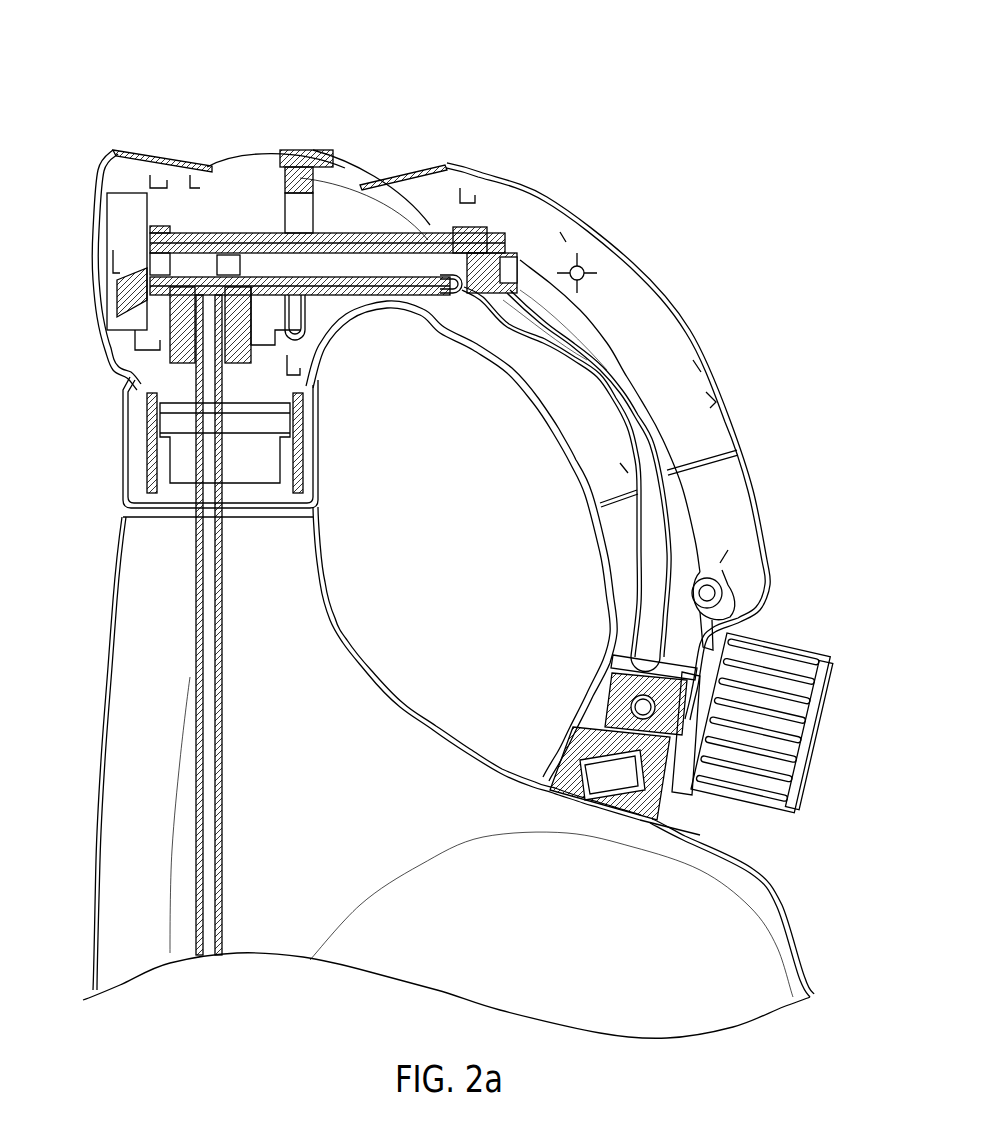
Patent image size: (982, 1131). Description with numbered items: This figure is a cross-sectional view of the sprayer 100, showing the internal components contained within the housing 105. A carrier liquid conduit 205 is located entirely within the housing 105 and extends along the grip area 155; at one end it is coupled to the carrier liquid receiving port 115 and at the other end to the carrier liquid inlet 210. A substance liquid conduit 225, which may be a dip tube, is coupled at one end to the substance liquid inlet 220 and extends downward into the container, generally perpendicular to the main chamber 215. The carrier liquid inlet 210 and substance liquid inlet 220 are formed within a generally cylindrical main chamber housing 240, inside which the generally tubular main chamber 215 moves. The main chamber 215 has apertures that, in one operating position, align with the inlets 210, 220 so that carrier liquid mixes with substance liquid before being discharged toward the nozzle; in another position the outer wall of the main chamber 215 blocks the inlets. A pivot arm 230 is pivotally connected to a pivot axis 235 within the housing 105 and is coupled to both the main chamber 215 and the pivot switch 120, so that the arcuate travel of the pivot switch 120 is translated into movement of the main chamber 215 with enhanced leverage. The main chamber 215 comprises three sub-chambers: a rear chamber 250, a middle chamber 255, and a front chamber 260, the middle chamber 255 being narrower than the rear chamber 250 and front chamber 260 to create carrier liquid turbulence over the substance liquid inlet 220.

The sprayer 100 is at (206, 69).
The housing 105 is at (545, 197).
The carrier liquid receiving port 115 is at (780, 657).
The pivot switch 120 is at (297, 160).
The grip area 155 is at (575, 480).
The carrier liquid conduit 205 is at (613, 400).
The carrier liquid inlet 210 is at (453, 280).
The main chamber 215 is at (347, 240).
The substance liquid inlet 220 is at (200, 293).
The substance liquid conduit 225 is at (205, 618).
The pivot arm 230 is at (307, 323).
The pivot axis 235 is at (300, 347).
The main chamber housing 240 is at (323, 278).
The rear chamber 250 is at (405, 257).
The middle chamber 255 is at (235, 263).
The front chamber 260 is at (187, 243).